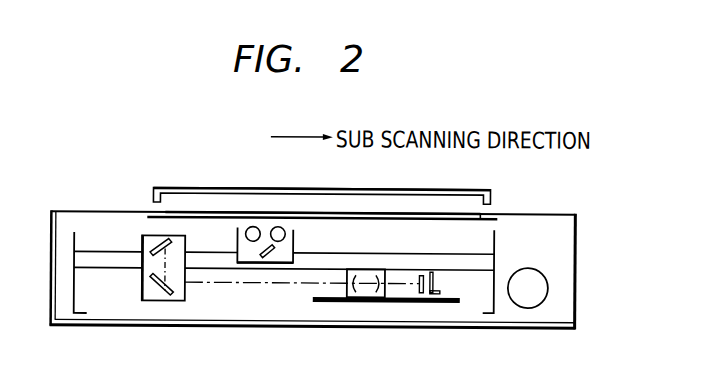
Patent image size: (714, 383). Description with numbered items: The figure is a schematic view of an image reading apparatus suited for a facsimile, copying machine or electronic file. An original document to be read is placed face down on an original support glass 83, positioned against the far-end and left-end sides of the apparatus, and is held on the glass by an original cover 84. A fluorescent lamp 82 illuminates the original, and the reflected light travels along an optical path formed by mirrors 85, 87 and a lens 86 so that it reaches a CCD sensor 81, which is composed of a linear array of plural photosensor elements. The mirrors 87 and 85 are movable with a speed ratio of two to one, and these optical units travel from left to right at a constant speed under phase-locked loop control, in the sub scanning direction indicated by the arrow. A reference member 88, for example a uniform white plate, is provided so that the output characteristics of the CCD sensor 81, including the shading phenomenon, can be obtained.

The CCD sensor 81 is at (437, 281).
The fluorescent lamp 82 is at (279, 227).
The original support glass 83 is at (397, 213).
The original cover 84 is at (456, 188).
The mirror 85 is at (142, 289).
The lens 86 is at (367, 278).
The mirror 87 is at (275, 258).
The reference member 88 is at (156, 219).